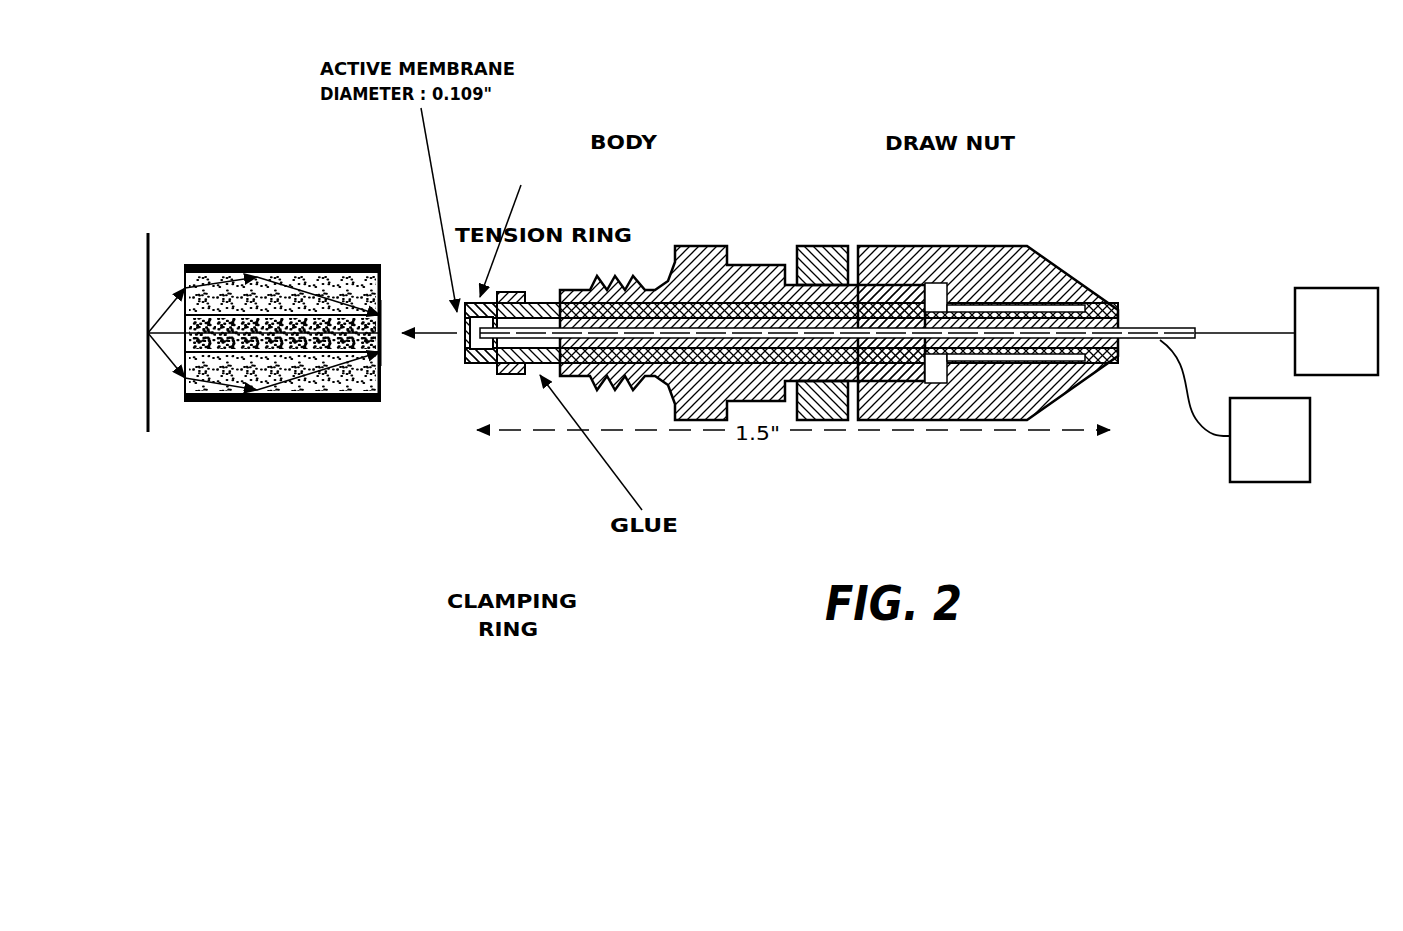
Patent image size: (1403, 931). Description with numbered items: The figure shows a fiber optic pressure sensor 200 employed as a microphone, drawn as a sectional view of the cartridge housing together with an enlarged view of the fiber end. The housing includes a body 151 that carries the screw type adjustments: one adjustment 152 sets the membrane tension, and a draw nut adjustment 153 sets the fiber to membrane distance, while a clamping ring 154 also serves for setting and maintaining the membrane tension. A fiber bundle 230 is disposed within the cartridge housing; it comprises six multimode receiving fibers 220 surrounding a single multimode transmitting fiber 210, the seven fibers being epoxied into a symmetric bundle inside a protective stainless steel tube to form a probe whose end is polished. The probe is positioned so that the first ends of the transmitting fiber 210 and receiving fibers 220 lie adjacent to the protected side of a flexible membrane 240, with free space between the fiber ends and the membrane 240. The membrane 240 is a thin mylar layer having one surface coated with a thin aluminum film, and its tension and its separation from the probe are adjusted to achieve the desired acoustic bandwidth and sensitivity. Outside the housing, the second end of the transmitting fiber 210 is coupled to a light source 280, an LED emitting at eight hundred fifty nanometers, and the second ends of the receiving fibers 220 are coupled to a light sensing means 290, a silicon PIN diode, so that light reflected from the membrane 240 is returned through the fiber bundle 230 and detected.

The membrane tension adjuster 200 is at (880, 296).
The body 151 is at (693, 242).
The screw type adjustment for membrane tension 152 is at (815, 242).
The screw type adjustment for fiber to membrane distance 153 is at (940, 242).
The clamping ring 154 is at (518, 377).
The transmitting fiber 210 is at (372, 263).
The receiving fibers 220 is at (182, 262).
The fiber bundle 230 is at (1136, 325).
The flexible membrane 240 is at (160, 462).
The light source 280 is at (1329, 286).
The light sensing means 290 is at (1293, 485).